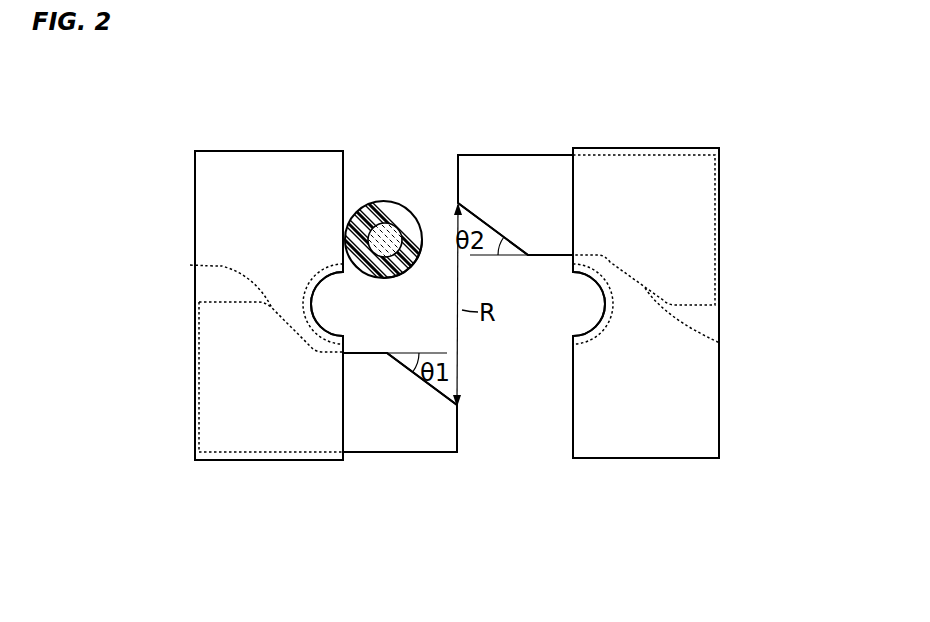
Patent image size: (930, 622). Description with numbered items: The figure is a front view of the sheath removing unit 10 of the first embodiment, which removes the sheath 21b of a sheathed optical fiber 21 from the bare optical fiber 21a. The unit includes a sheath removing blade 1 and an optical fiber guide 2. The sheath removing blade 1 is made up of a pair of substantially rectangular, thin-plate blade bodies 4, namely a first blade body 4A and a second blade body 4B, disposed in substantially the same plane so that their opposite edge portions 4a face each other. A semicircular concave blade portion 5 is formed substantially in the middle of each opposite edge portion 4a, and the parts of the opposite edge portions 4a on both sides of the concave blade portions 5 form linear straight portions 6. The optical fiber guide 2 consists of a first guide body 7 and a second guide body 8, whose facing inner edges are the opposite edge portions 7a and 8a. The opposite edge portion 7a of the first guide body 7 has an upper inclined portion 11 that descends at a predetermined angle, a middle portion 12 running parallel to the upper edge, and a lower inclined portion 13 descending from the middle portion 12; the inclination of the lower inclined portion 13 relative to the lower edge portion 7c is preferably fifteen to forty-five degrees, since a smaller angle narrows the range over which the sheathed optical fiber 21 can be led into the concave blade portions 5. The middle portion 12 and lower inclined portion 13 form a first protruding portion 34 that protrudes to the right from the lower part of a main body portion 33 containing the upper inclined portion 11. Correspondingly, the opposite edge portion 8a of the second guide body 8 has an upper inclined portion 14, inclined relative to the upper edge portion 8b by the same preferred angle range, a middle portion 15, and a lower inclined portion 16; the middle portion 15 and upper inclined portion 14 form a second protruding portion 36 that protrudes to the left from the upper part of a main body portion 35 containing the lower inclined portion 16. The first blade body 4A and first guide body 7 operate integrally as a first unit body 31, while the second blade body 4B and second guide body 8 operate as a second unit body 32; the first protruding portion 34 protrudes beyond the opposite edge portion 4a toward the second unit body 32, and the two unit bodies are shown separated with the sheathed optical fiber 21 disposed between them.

The sheath removing blade 1 is at (220, 146).
The optical fiber guide 2 is at (543, 138).
The blade body 4 is at (457, 274).
The first blade body 4A is at (293, 150).
The second blade body 4B is at (603, 148).
The opposite edge portion 4a is at (345, 384).
The concave blade portion 5 is at (318, 293).
The straight portion 6 is at (347, 156).
The first guide body 7 is at (365, 452).
The opposite edge portion 7a is at (380, 352).
The lower edge portion 7c is at (415, 452).
The second guide body 8 is at (470, 150).
The opposite edge portion 8a is at (540, 256).
The upper edge portion 8b is at (497, 155).
The sheath removing unit 10 is at (750, 108).
The upper inclined portion 11 is at (190, 265).
The middle portion 12 is at (355, 352).
The lower inclined portion 13 is at (440, 390).
The upper inclined portion 14 is at (457, 224).
The middle portion 15 is at (573, 262).
The lower inclined portion 16 is at (720, 343).
The sheathed optical fiber 21 is at (375, 203).
The bare optical fiber 21a is at (385, 242).
The sheath 21b is at (405, 270).
The first unit body 31 is at (266, 115).
The second unit body 32 is at (689, 126).
The main body portion 33 is at (218, 388).
The first protruding portion 34 is at (458, 442).
The main body portion 35 is at (698, 230).
The second protruding portion 36 is at (458, 168).